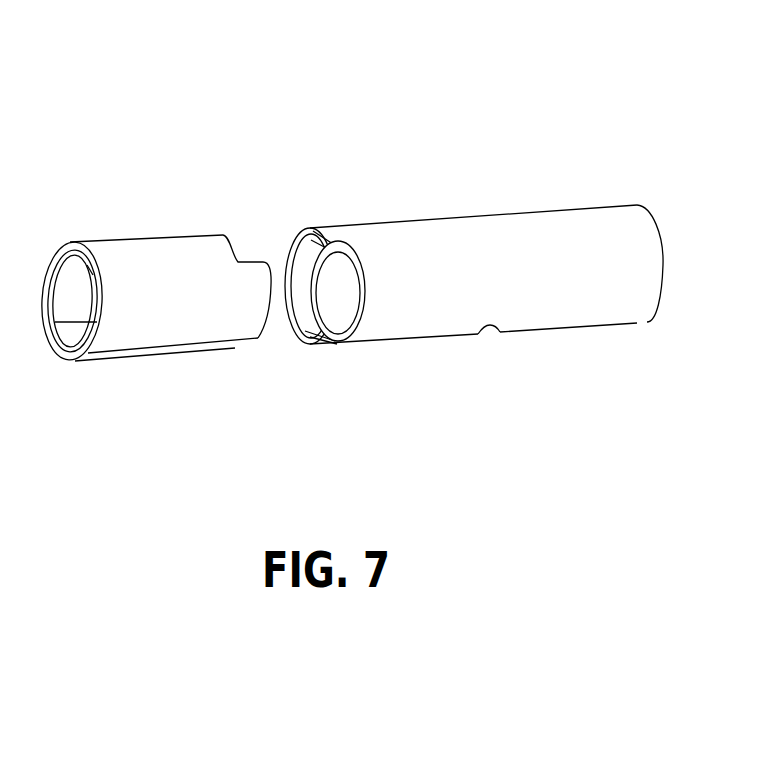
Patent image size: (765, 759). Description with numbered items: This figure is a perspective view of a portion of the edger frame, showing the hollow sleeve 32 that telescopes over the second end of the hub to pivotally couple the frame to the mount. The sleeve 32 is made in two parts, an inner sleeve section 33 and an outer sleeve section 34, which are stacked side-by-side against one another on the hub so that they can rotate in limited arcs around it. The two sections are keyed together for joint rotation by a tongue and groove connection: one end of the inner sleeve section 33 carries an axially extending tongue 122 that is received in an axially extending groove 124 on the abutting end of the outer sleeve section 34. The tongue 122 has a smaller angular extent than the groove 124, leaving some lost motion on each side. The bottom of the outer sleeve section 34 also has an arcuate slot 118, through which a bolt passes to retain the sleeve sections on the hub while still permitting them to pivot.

The hollow sleeve 32 is at (292, 91).
The inner sleeve section 33 is at (118, 257).
The outer sleeve section 34 is at (385, 240).
The tongue 122 is at (267, 290).
The groove 124 is at (366, 279).
The arcuate slot 118 is at (491, 324).